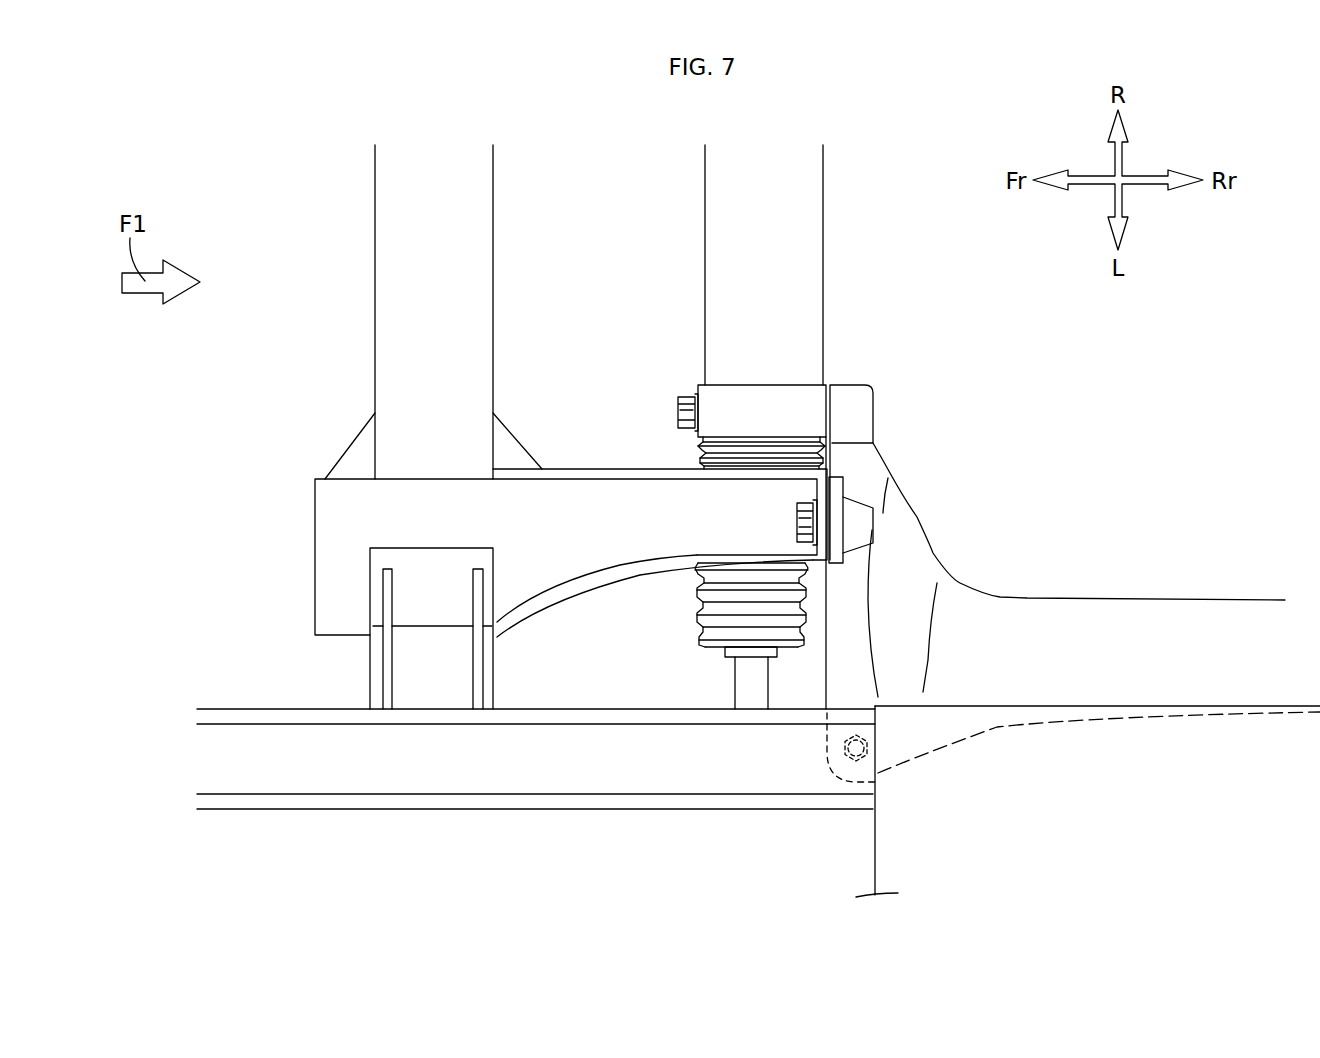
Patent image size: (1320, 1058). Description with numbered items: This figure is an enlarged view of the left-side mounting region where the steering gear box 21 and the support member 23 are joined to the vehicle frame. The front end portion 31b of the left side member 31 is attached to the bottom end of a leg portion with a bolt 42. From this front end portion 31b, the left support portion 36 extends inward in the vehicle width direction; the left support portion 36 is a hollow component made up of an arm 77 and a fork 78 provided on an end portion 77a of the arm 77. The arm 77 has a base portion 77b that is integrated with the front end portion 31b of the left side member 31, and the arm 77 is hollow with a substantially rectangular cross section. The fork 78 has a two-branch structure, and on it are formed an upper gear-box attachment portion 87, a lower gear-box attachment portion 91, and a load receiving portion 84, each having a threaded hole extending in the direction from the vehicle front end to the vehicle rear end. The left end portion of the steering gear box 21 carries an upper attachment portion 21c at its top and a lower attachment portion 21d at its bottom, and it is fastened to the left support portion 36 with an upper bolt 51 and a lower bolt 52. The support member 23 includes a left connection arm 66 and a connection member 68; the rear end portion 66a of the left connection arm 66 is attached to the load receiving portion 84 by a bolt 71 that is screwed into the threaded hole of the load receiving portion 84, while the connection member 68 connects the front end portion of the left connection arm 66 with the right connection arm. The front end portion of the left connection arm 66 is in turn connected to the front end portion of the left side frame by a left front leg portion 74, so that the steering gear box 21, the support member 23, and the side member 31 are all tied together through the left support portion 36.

The steering gear box 21 is at (726, 291).
The upper attachment portion 21c is at (762, 350).
The lower attachment portion 21d is at (727, 400).
The support member 23 is at (390, 312).
The left side member 31 is at (1196, 693).
The front end portion 31b is at (900, 690).
The left support portion 36 is at (742, 609).
The bolt 42 is at (857, 757).
The upper bolt 51 is at (623, 412).
The lower bolt 52 is at (675, 413).
The left connection arm 66 is at (571, 515).
The rear end portion 66a is at (803, 477).
The connection member 68 is at (362, 207).
The bolt 71 is at (797, 525).
The left front leg portion 74 is at (375, 658).
The arm 77 is at (771, 698).
The end portion 77a is at (833, 615).
The base portion 77b is at (850, 698).
The fork 78 is at (803, 582).
The load receiving portion 84 is at (835, 517).
The upper gear-box attachment portion 87 is at (904, 438).
The lower gear-box attachment portion 91 is at (860, 397).